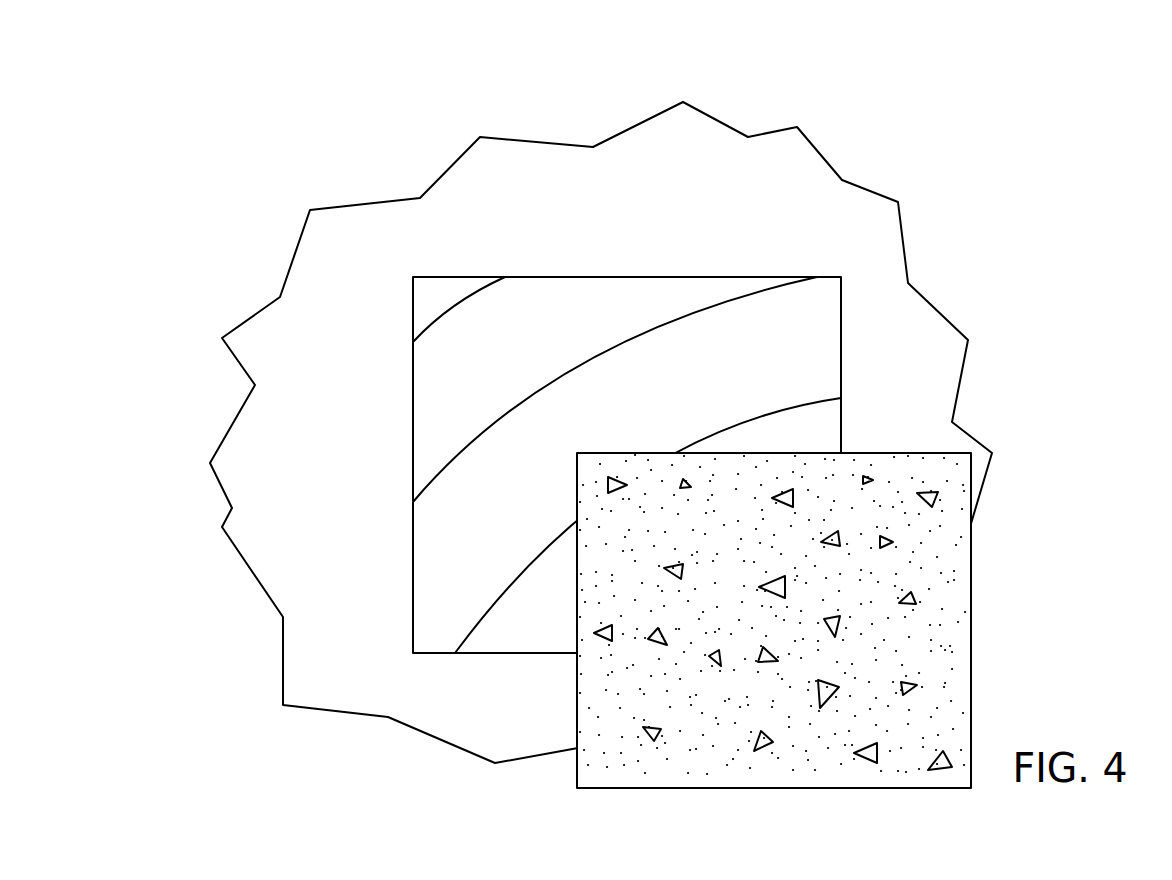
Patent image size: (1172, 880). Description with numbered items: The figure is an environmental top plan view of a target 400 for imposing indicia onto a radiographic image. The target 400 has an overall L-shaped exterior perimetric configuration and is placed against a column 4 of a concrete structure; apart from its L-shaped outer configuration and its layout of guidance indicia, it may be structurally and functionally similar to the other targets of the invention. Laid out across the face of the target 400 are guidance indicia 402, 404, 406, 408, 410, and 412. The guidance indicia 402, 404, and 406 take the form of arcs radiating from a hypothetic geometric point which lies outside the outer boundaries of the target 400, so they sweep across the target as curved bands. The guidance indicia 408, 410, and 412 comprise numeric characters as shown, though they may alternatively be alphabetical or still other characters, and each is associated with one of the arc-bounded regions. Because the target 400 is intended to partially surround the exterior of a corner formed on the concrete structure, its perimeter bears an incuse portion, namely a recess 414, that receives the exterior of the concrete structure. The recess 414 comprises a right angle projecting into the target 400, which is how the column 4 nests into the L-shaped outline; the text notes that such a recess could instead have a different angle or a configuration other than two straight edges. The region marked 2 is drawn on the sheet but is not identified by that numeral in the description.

The target 400 is at (610, 180).
The substrate region 2 is at (735, 196).
The column 4 is at (832, 574).
The guidance indicia 402 is at (745, 423).
The guidance indicia 404 is at (557, 377).
The guidance indicia 406 is at (452, 312).
The guidance indicia 408 is at (548, 593).
The guidance indicia 410 is at (470, 482).
The guidance indicia 412 is at (421, 376).
The recess 414 is at (747, 457).